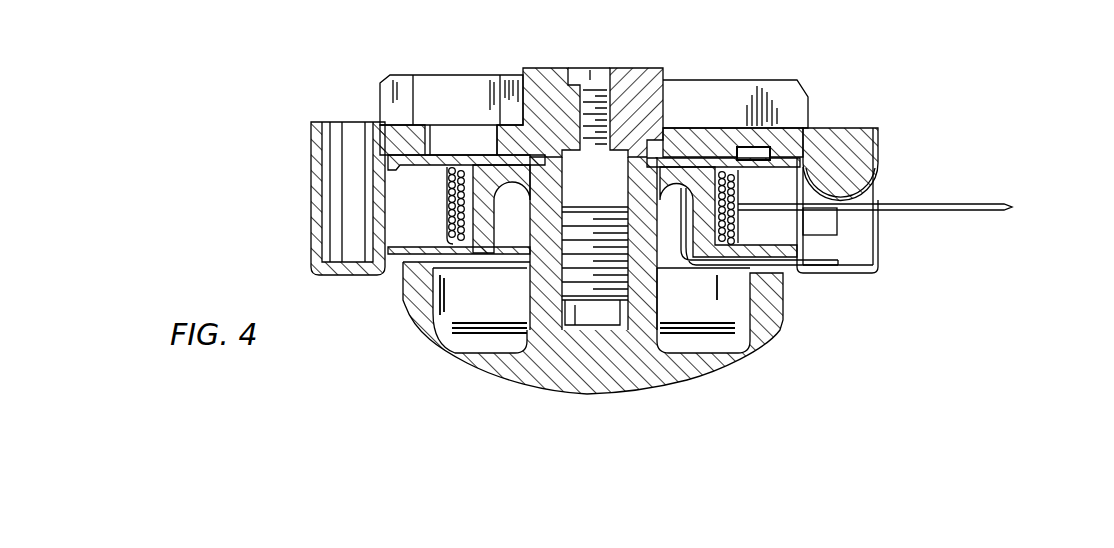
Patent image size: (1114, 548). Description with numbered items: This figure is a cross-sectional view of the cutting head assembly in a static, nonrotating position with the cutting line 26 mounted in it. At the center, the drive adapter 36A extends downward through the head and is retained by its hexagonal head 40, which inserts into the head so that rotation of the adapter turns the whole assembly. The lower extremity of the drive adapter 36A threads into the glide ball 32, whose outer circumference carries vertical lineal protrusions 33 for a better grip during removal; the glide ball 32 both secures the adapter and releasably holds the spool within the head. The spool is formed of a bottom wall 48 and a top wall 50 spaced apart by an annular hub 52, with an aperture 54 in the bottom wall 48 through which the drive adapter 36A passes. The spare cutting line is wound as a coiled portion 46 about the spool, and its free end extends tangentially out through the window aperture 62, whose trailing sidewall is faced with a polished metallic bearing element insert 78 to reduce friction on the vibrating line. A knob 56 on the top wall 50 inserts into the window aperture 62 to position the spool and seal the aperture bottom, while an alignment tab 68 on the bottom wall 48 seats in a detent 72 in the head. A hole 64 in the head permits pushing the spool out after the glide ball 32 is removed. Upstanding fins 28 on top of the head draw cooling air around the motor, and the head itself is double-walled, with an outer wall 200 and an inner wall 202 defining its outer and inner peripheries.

The cutting line 26 is at (988, 204).
The upstanding fins 28 is at (746, 80).
The glide ball 32 is at (427, 348).
The vertical lineal protrusions 33 is at (790, 320).
The drive adapter 36A is at (588, 282).
The hexagonal head 40 is at (563, 68).
The coiled portion of cutting line 46 is at (453, 202).
The bottom wall 48 is at (393, 153).
The top wall 50 is at (403, 253).
The annular hub 52 is at (510, 237).
The aperture 54 is at (673, 130).
The knob 56 is at (828, 267).
The window aperture 62 is at (878, 272).
The hole 64 is at (452, 140).
The alignment protuberance tab 68 is at (748, 162).
The detent 72 is at (753, 143).
The bearing element insert 78 is at (828, 219).
The outer wall 200 is at (878, 148).
The inner wall 202 is at (360, 198).